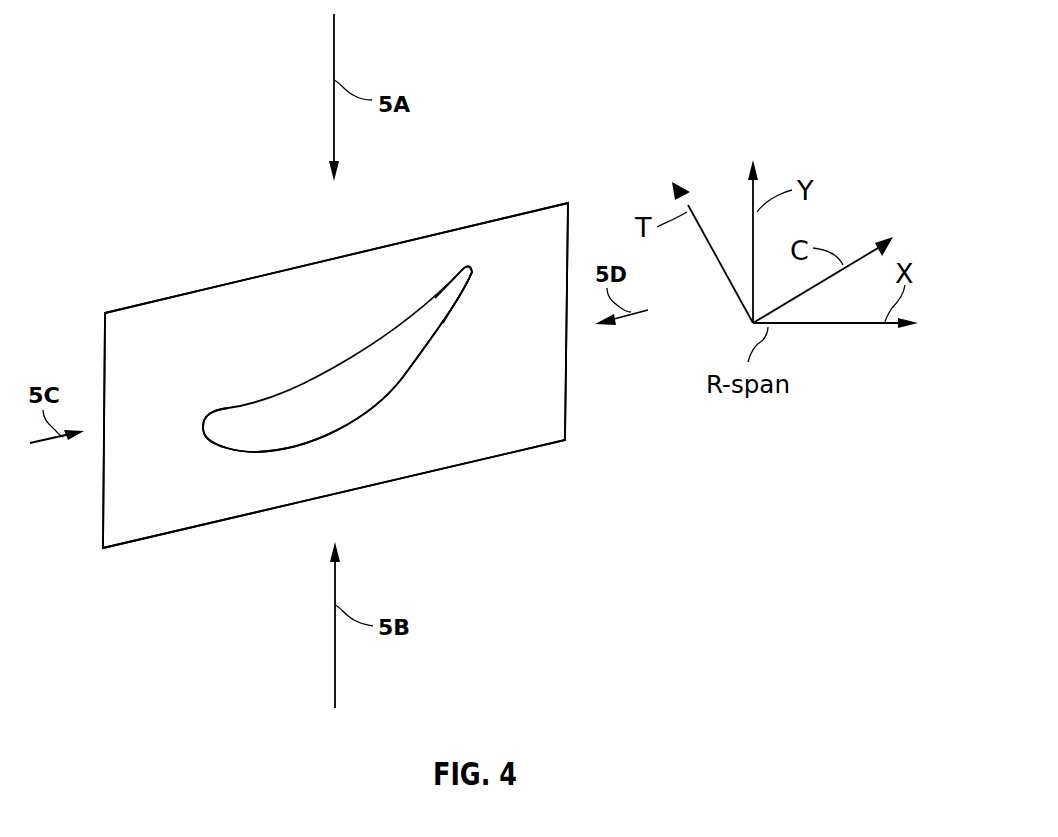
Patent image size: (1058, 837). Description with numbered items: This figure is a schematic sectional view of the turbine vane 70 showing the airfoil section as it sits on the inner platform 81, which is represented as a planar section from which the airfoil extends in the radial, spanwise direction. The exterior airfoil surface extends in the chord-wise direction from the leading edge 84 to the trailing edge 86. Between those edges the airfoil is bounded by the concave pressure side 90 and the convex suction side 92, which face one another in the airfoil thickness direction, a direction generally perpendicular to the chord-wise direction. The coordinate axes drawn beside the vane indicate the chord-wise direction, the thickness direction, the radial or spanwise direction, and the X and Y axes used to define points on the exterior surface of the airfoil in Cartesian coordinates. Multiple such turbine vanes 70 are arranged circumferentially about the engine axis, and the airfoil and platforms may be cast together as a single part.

The turbine vane 70 is at (120, 228).
The inner platform 81 is at (150, 483).
The leading edge 84 is at (202, 424).
The trailing edge 86 is at (468, 268).
The pressure side 90 is at (283, 393).
The suction side 92 is at (277, 453).